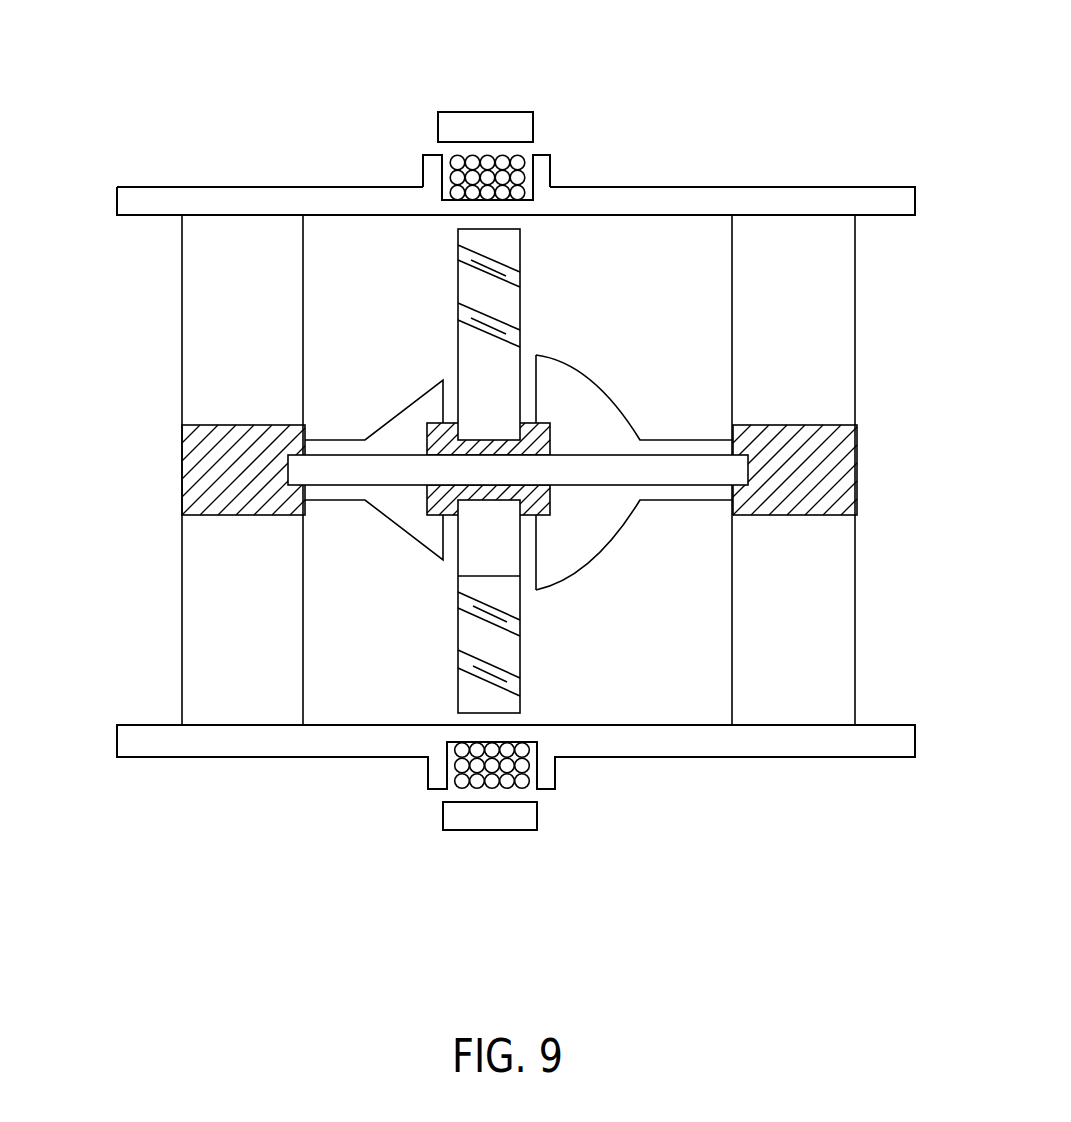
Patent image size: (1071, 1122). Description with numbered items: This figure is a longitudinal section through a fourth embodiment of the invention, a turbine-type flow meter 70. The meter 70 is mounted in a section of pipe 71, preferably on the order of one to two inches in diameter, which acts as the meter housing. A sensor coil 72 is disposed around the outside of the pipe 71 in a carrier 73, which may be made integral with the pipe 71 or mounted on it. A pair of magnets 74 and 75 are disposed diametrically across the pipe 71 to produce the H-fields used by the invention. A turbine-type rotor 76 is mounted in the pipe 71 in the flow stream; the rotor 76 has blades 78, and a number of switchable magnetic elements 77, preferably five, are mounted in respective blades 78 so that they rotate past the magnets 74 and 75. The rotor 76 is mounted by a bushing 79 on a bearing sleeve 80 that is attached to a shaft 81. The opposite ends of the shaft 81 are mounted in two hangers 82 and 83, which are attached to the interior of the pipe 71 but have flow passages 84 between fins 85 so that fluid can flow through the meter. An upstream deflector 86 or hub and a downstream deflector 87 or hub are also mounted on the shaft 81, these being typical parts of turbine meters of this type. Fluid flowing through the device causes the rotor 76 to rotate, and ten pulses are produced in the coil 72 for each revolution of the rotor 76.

The turbine-type flow meter 70 is at (792, 136).
The pipe 71 is at (683, 186).
The sensor coil 72 is at (442, 157).
The carrier 73 is at (550, 162).
The magnet 74 is at (497, 112).
The magnet 75 is at (498, 830).
The turbine-type rotor 76 is at (518, 311).
The switchable magnetic elements 77 is at (482, 268).
The blades 78 is at (518, 276).
The bushing 79 is at (505, 425).
The bearing sleeve 80 is at (550, 447).
The shaft 81 is at (593, 473).
The hanger 82 is at (170, 543).
The hanger 83 is at (872, 473).
The flow passages 84 is at (217, 617).
The fins 85 is at (182, 577).
The upstream deflector 86 is at (402, 522).
The downstream deflector 87 is at (553, 590).